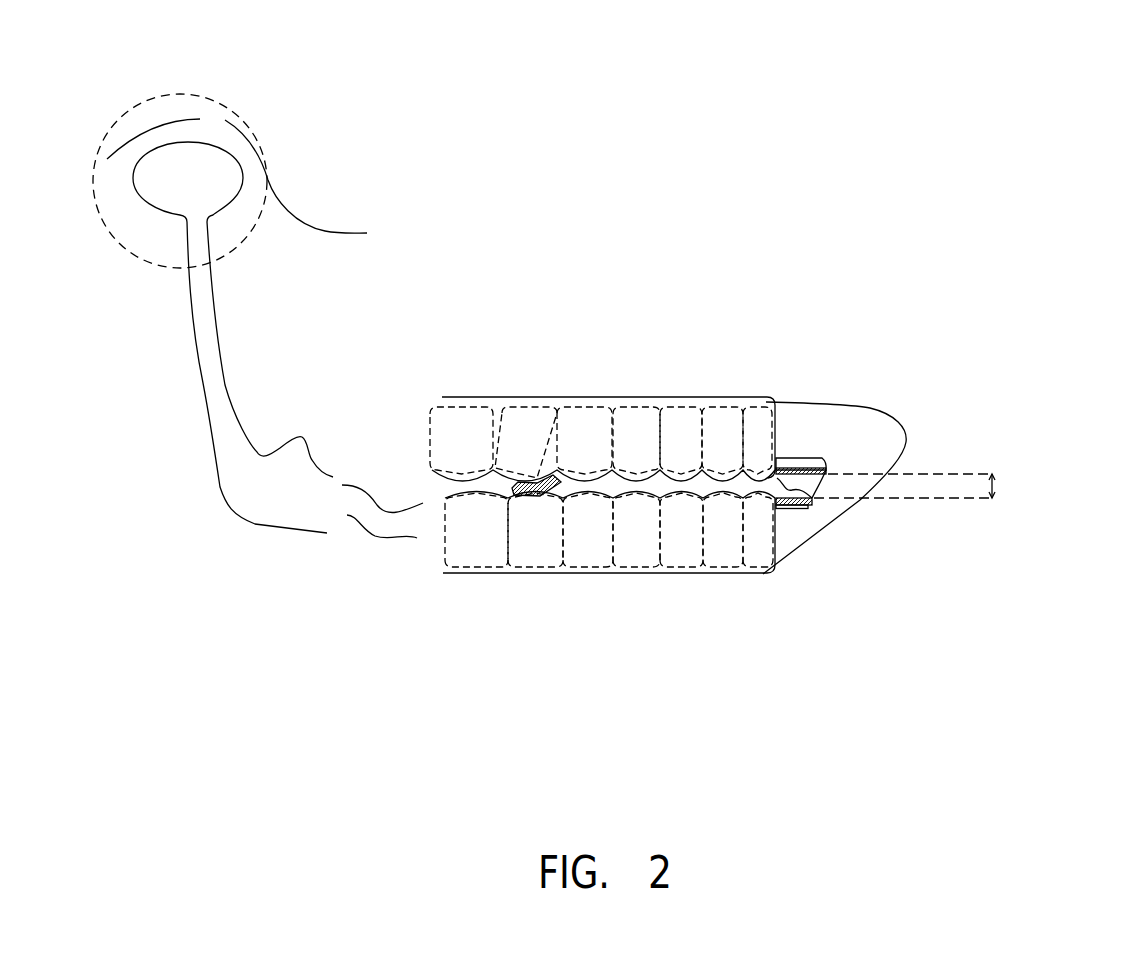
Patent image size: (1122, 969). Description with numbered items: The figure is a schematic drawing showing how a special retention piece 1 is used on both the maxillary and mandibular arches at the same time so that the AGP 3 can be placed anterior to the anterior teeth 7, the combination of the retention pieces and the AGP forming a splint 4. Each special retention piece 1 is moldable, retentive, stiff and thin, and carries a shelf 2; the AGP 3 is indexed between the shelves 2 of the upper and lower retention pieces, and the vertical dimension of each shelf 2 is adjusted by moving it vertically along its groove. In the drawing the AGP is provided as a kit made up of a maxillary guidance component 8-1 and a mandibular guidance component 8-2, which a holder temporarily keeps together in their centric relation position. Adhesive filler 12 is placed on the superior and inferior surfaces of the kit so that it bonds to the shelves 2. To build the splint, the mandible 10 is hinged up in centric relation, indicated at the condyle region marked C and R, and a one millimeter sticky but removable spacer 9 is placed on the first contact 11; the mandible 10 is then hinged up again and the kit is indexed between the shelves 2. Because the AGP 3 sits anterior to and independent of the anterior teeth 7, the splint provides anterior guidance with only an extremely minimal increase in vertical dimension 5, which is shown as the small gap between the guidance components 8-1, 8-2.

The special retention piece 1 is at (562, 398).
The shelf 2 is at (816, 478).
The AGP 3 is at (823, 467).
The splint 4 is at (848, 486).
The vertical dimension 5 is at (993, 485).
The anterior teeth 7 is at (757, 423).
The maxillary guidance component 8-1 is at (807, 470).
The mandibular guidance component 8-2 is at (813, 508).
The spacer 9 is at (530, 496).
The mandible 10 is at (280, 520).
The first contact 11 is at (537, 477).
The adhesive filler 12 is at (822, 473).
The condyle C is at (205, 130).
The articular fossa R is at (505, 207).